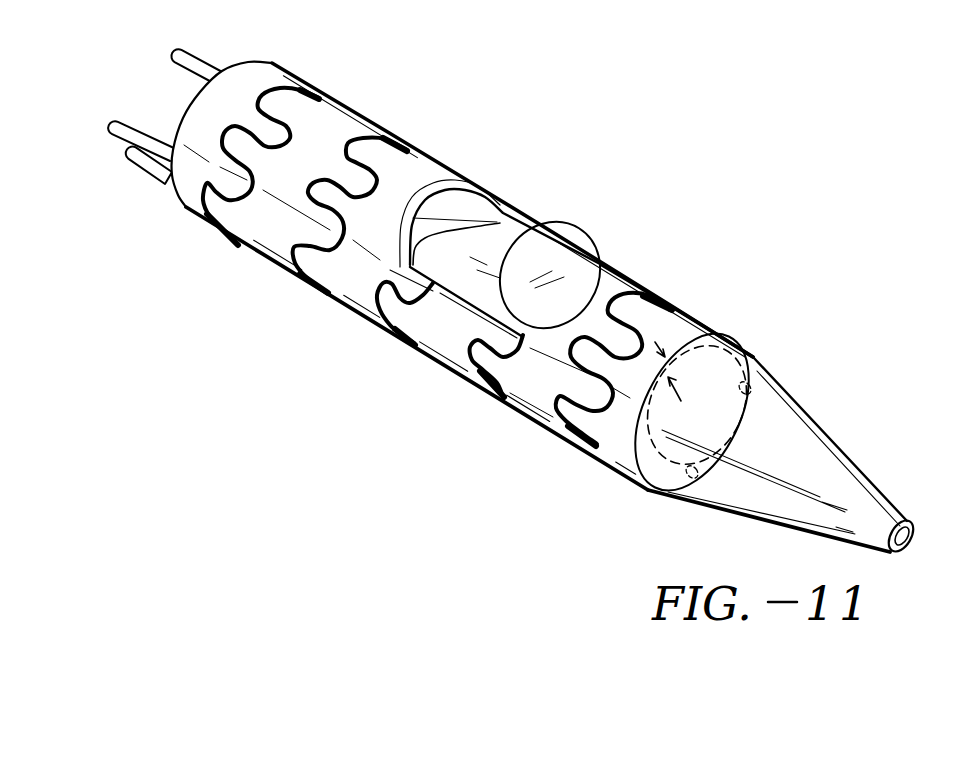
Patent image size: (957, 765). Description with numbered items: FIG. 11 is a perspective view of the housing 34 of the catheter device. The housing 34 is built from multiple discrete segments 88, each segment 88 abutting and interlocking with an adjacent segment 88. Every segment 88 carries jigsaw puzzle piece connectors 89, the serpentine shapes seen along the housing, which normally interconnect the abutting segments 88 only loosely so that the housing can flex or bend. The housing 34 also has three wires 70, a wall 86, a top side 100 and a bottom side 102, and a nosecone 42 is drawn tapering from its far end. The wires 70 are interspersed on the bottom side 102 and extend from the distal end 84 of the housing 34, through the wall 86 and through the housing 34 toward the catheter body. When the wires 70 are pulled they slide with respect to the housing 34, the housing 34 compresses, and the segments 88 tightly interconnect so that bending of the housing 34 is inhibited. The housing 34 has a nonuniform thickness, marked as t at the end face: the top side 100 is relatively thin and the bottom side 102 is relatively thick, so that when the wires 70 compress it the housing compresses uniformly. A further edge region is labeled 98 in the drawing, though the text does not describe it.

The housing 34 is at (513, 292).
The nosecone 42 is at (832, 462).
The wires 70 is at (200, 63).
The distal end 84 is at (707, 338).
The wall 86 is at (657, 484).
The segments 88 is at (362, 117).
The jigsaw puzzle piece connectors 89 is at (277, 96).
The lower housing edge 98 is at (357, 293).
The top side 100 is at (645, 302).
The bottom side 102 is at (770, 512).